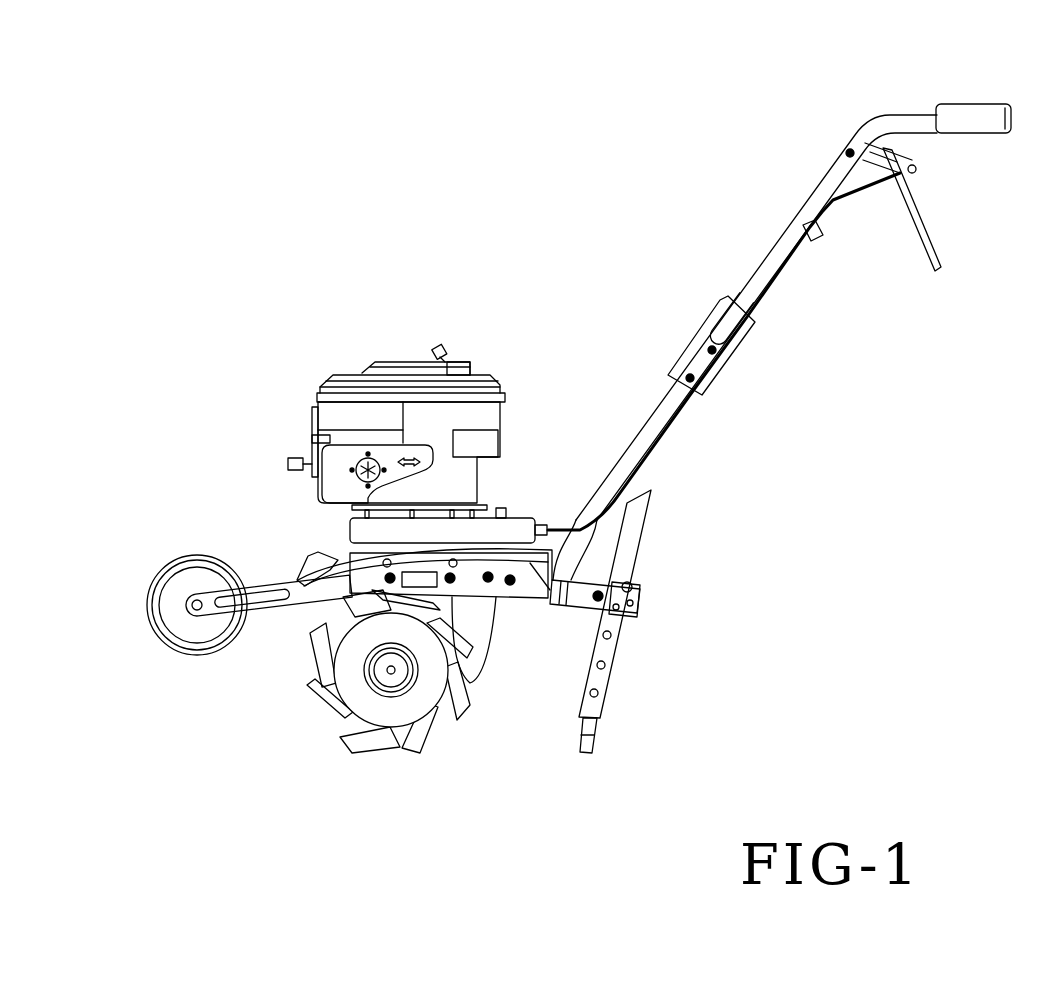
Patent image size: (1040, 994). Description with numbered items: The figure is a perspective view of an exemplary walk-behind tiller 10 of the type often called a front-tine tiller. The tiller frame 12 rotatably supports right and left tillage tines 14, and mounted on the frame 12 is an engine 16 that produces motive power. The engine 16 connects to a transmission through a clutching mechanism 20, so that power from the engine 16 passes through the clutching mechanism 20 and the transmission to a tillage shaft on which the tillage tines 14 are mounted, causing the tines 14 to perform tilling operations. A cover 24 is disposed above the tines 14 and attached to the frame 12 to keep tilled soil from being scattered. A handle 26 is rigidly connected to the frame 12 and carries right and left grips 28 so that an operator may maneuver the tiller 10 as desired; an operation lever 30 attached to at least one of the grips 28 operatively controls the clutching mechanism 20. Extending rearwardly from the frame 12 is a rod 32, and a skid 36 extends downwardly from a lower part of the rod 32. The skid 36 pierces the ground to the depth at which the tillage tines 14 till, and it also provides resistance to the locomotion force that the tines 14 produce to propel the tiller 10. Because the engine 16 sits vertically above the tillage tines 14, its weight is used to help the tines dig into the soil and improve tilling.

The walk-behind tiller 10 is at (497, 298).
The tiller frame 12 is at (498, 598).
The tillage tines 14 is at (300, 690).
The engine 16 is at (308, 430).
The clutching mechanism 20 is at (470, 597).
The cover 24 is at (335, 555).
The handle 26 is at (907, 120).
The grips 28 is at (988, 108).
The operation lever 30 is at (943, 262).
The rod 32 is at (582, 610).
The skid 36 is at (613, 677).